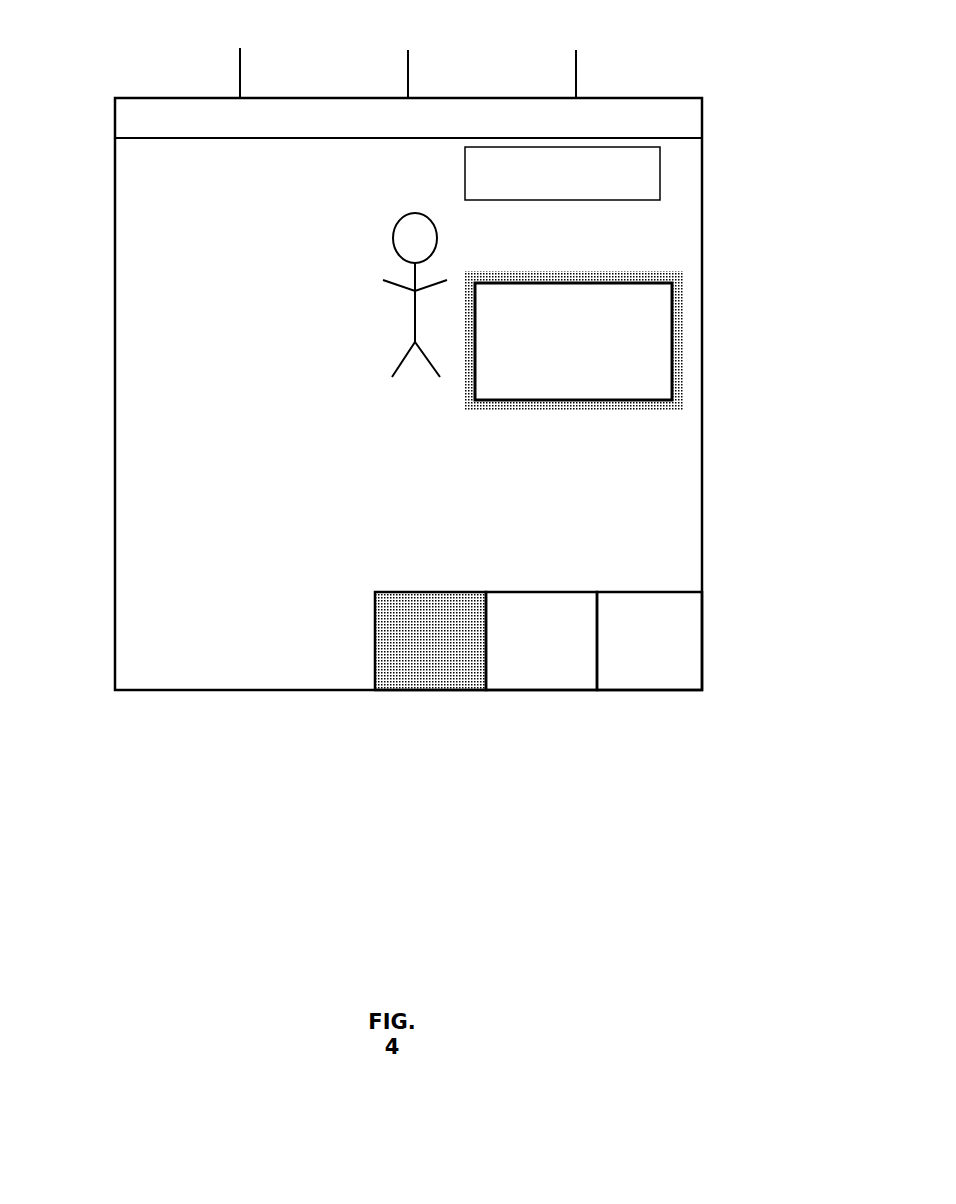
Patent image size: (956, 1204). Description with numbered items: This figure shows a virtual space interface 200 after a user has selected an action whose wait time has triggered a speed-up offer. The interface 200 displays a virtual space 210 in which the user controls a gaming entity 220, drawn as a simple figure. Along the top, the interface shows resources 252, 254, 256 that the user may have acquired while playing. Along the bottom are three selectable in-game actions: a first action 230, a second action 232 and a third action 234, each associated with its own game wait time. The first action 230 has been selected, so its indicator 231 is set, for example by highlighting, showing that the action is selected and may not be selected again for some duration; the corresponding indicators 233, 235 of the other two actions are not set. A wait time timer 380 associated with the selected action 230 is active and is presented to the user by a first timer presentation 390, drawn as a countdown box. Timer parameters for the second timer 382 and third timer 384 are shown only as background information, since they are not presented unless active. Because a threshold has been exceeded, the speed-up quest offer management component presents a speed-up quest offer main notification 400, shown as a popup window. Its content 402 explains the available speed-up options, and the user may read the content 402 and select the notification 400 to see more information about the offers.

The virtual space interface 200 is at (702, 98).
The virtual space 210 is at (288, 425).
The gaming entity 220 is at (397, 245).
The first action 230 is at (452, 690).
The indicator 231 is at (412, 668).
The second action 232 is at (549, 690).
The indicator 233 is at (520, 678).
The third action 234 is at (647, 690).
The indicator 235 is at (693, 678).
The resource 252 is at (239, 78).
The resource 254 is at (406, 78).
The resource 256 is at (578, 78).
The first wait time timer 380 is at (603, 214).
The second timer 382 is at (628, 235).
The third timer 384 is at (650, 256).
The first timer presentation 390 is at (660, 168).
The speed-up quest offer main notification 400 is at (673, 333).
The content 402 is at (623, 357).